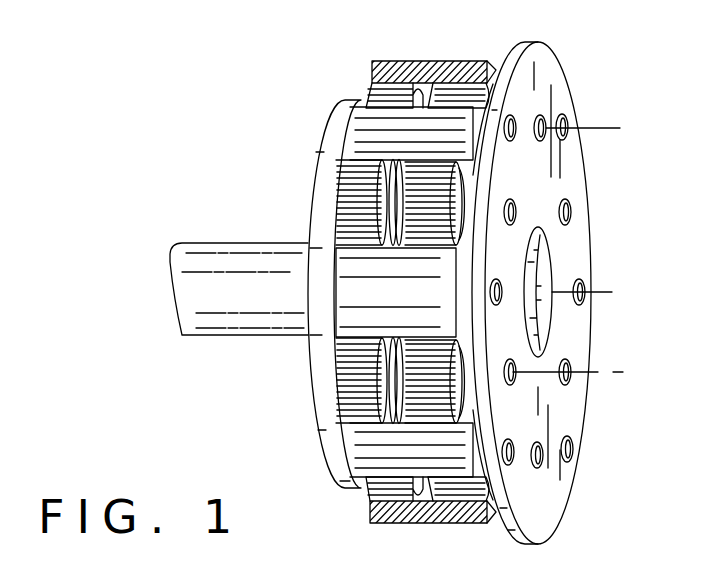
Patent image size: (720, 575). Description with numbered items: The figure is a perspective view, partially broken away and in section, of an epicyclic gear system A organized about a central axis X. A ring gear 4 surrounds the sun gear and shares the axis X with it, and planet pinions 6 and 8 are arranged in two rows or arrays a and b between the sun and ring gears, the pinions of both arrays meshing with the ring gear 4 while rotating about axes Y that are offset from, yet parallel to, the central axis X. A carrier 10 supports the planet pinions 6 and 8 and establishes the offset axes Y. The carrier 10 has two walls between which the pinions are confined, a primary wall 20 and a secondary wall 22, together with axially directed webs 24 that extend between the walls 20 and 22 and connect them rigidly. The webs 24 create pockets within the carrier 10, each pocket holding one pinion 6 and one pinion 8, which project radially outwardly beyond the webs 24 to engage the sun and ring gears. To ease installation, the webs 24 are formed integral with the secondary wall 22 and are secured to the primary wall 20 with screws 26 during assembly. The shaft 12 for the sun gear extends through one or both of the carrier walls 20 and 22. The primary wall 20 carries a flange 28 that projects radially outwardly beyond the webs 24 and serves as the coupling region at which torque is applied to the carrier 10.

The ring gear 4 is at (431, 288).
The planet pinion 6 is at (445, 197).
The planet pinion 8 is at (354, 198).
The carrier 10 is at (593, 252).
The shaft 12 is at (207, 262).
The primary wall 20 is at (558, 400).
The secondary wall 22 is at (322, 399).
The webs 24 is at (376, 455).
The screws 26 is at (563, 116).
The flange 28 is at (537, 517).
The array a is at (445, 83).
The array b is at (403, 83).
The epicyclic gear system A is at (617, 157).
The central axis X is at (168, 290).
The axes Y is at (318, 113).